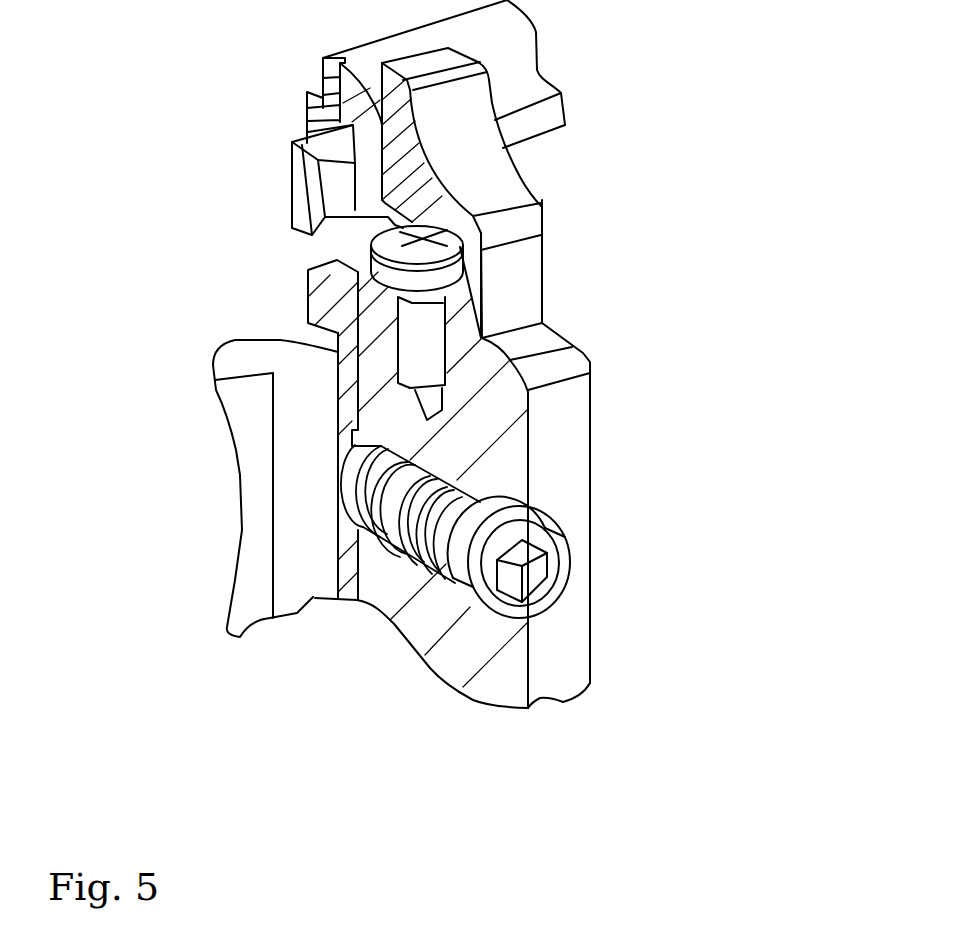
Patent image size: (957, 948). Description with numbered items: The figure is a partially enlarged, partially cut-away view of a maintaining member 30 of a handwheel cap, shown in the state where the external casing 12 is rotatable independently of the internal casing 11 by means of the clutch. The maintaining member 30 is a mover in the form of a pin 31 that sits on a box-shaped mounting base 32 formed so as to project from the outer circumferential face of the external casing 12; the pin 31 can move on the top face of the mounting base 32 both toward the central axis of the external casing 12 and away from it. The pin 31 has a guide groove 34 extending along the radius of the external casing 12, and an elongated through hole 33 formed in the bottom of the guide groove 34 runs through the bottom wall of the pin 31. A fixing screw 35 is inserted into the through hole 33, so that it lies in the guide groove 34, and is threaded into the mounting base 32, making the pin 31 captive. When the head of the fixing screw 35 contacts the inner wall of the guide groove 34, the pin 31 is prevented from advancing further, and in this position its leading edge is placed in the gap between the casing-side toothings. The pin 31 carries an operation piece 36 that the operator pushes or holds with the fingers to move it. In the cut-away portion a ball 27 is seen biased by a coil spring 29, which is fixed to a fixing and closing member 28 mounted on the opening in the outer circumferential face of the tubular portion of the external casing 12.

The internal casing 11 is at (347, 383).
The external casing 12 is at (528, 76).
The ball 27 is at (357, 493).
The fixing and closing member 28 is at (553, 555).
The coil spring 29 is at (433, 492).
The maintaining member 30 is at (610, 211).
The pin 31 is at (512, 288).
The mounting base 32 is at (540, 343).
The through hole 33 is at (350, 248).
The guide groove 34 is at (338, 197).
The fixing screw 35 is at (410, 351).
The operation piece 36 is at (490, 173).